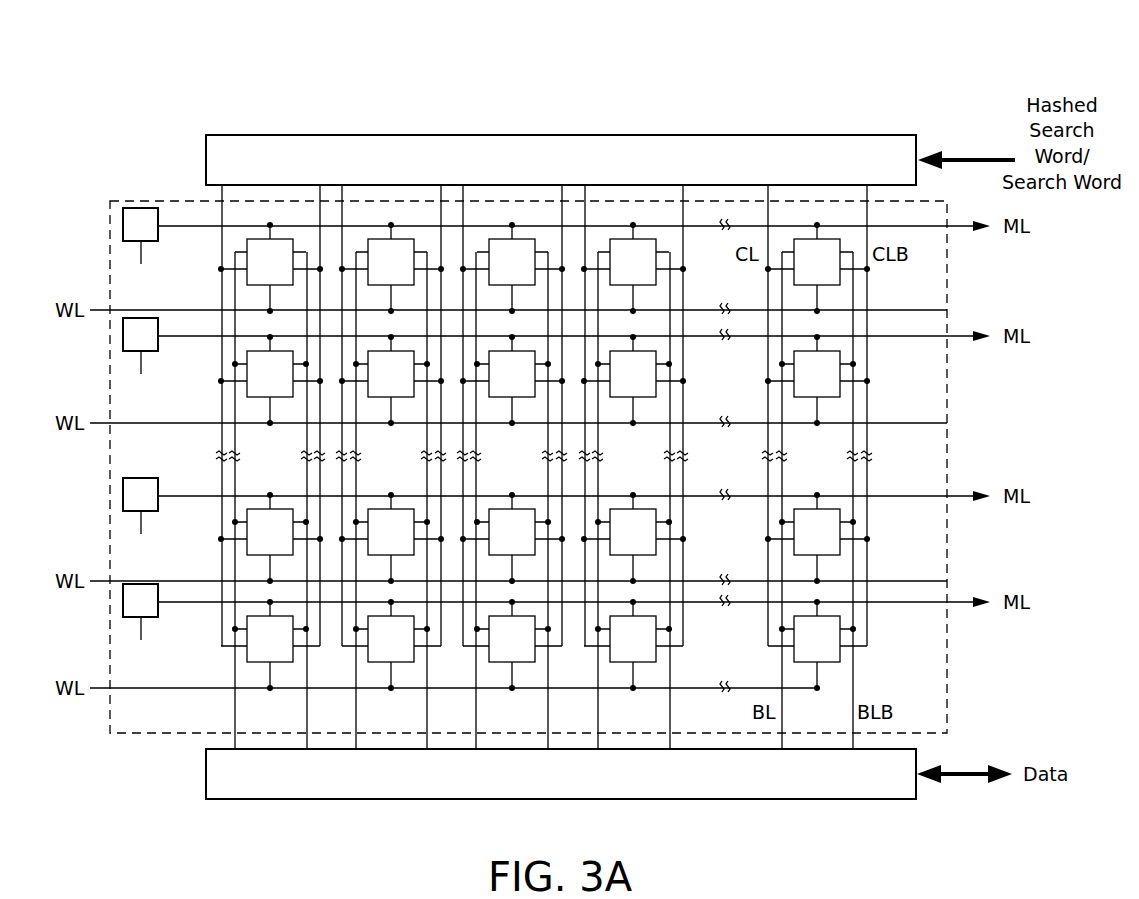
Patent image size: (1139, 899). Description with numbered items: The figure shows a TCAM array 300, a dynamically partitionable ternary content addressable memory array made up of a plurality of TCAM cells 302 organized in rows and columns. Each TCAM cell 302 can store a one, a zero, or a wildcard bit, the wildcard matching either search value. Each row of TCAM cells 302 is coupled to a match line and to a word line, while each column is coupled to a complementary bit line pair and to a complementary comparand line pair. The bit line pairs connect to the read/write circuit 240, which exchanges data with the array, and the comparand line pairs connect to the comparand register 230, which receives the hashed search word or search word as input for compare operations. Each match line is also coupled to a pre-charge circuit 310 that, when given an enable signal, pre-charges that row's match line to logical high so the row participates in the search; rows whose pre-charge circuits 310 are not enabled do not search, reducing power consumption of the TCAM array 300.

The comparand register 230 is at (561, 160).
The read/write circuit 240 is at (561, 774).
The TCAM array 300 is at (947, 280).
The TCAM cell 302 is at (544, 456).
The pre-charge circuit 310 is at (123, 228).